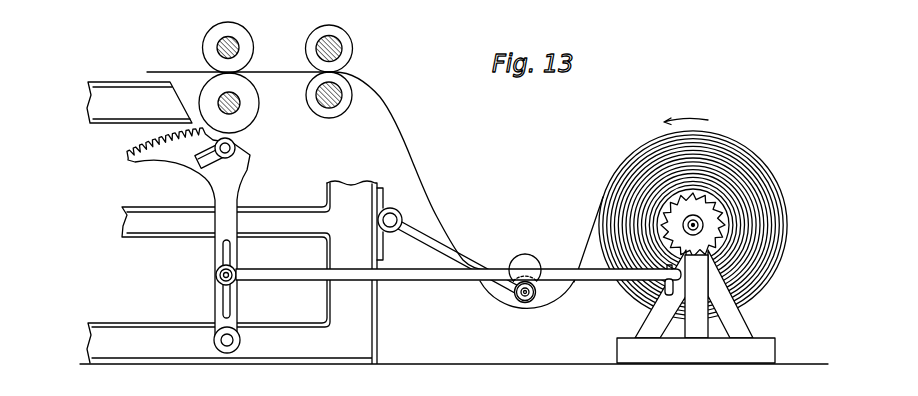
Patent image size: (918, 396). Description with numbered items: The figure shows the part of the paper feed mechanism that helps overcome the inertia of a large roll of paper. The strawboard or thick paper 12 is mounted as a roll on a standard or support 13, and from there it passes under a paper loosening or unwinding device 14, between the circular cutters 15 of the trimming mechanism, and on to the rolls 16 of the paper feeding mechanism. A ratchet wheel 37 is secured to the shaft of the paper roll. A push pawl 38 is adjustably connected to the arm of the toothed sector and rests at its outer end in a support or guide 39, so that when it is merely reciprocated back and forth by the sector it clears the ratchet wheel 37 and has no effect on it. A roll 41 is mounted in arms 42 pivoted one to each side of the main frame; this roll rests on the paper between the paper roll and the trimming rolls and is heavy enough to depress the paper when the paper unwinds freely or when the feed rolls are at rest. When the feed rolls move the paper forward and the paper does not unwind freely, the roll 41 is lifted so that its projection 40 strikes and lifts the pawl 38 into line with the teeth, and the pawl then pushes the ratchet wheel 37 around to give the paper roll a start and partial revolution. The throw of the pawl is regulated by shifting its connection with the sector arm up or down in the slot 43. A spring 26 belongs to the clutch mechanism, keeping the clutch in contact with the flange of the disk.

The strawboard or thick paper 12 is at (393, 115).
The standard or support 13 is at (745, 325).
The paper loosening or unwinding device 14 is at (541, 289).
The circular cutters 15 is at (343, 30).
The rolls of the paper feeding mechanism 16 is at (252, 21).
The spring 26 is at (236, 188).
The ratchet wheel 37 is at (693, 225).
The push pawl 38 is at (409, 281).
The support or guide 39 is at (668, 296).
The projection 40 is at (520, 307).
The roll 41 is at (542, 306).
The arms 42 is at (408, 234).
The slot 43 is at (229, 303).